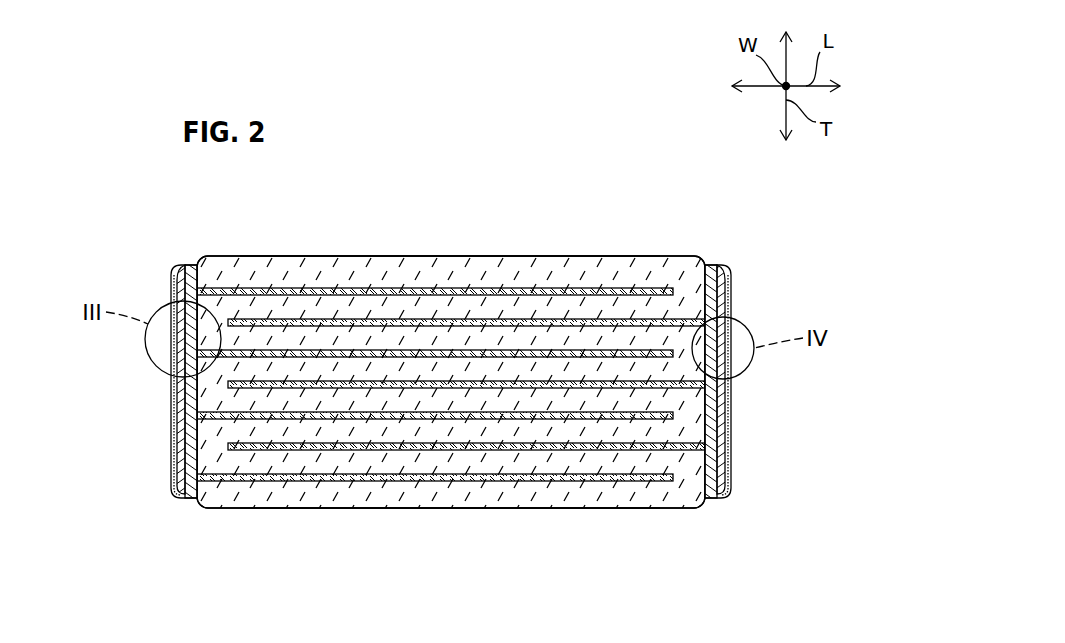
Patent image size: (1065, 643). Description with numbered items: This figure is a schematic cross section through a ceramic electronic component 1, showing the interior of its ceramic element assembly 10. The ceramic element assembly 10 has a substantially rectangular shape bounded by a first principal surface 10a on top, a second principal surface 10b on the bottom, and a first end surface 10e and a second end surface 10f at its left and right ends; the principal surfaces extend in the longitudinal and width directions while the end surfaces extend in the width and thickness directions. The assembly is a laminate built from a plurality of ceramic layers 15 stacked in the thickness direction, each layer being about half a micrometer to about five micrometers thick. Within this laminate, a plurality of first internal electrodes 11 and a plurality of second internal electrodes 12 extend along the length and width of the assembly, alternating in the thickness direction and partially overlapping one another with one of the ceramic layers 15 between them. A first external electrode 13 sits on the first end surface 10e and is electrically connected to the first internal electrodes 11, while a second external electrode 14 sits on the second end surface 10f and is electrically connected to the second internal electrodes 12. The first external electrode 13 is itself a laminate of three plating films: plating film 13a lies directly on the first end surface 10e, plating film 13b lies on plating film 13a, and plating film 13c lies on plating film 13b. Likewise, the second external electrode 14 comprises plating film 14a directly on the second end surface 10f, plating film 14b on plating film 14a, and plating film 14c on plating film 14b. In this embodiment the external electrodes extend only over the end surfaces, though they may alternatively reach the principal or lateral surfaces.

The ceramic electronic component 1 is at (697, 212).
The ceramic element assembly 10 is at (572, 257).
The first principal surface 10a is at (448, 257).
The second principal surface 10b is at (447, 508).
The first end surface 10e is at (187, 465).
The second end surface 10f is at (708, 468).
The first internal electrode 11 is at (296, 287).
The second internal electrode 12 is at (359, 318).
The first external electrode 13 is at (66, 372).
The plating film 13a is at (177, 398).
The plating film 13b is at (175, 421).
The plating film 13c is at (172, 441).
The second external electrode 14 is at (842, 372).
The plating film 14a is at (717, 403).
The plating film 14b is at (725, 420).
The plating film 14c is at (729, 441).
The ceramic layer 15 is at (314, 463).